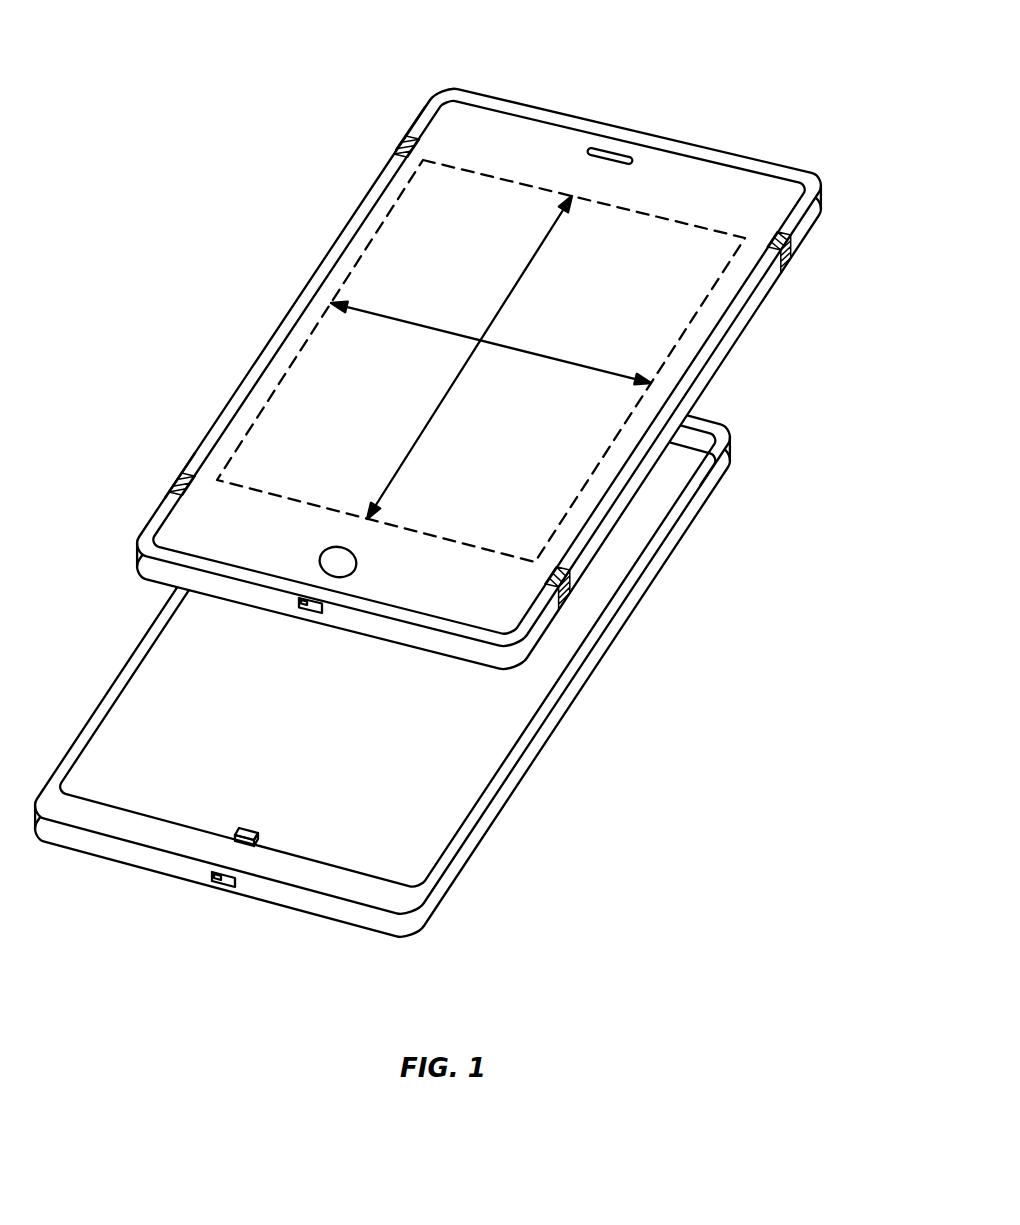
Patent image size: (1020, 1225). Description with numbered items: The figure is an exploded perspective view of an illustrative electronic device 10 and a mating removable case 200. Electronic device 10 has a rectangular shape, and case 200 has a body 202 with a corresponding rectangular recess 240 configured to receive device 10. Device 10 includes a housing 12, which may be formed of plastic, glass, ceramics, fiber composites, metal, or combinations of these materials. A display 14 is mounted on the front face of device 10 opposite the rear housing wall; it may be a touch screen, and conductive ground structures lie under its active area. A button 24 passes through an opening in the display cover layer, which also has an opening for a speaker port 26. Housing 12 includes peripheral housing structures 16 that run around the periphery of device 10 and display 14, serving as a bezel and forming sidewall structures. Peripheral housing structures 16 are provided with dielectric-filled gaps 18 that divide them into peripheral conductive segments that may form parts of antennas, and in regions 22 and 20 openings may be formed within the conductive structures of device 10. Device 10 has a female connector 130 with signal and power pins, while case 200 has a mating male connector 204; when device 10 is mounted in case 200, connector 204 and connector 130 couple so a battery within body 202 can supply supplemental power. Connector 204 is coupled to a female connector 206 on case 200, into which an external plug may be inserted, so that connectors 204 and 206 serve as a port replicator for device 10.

The electronic device 10 is at (499, 360).
The housing 12 is at (830, 213).
The display 14 is at (483, 154).
The peripheral housing structures 16 is at (468, 652).
The gaps 18 is at (396, 144).
The region 20 is at (157, 483).
The region 22 is at (425, 72).
The button 24 is at (345, 585).
The speaker port 26 is at (618, 156).
The female connector 130 is at (306, 615).
The case 200 is at (380, 643).
The body 202 is at (422, 930).
The male connector 204 is at (252, 826).
The female connector 206 is at (226, 890).
The rectangular recess 240 is at (137, 750).